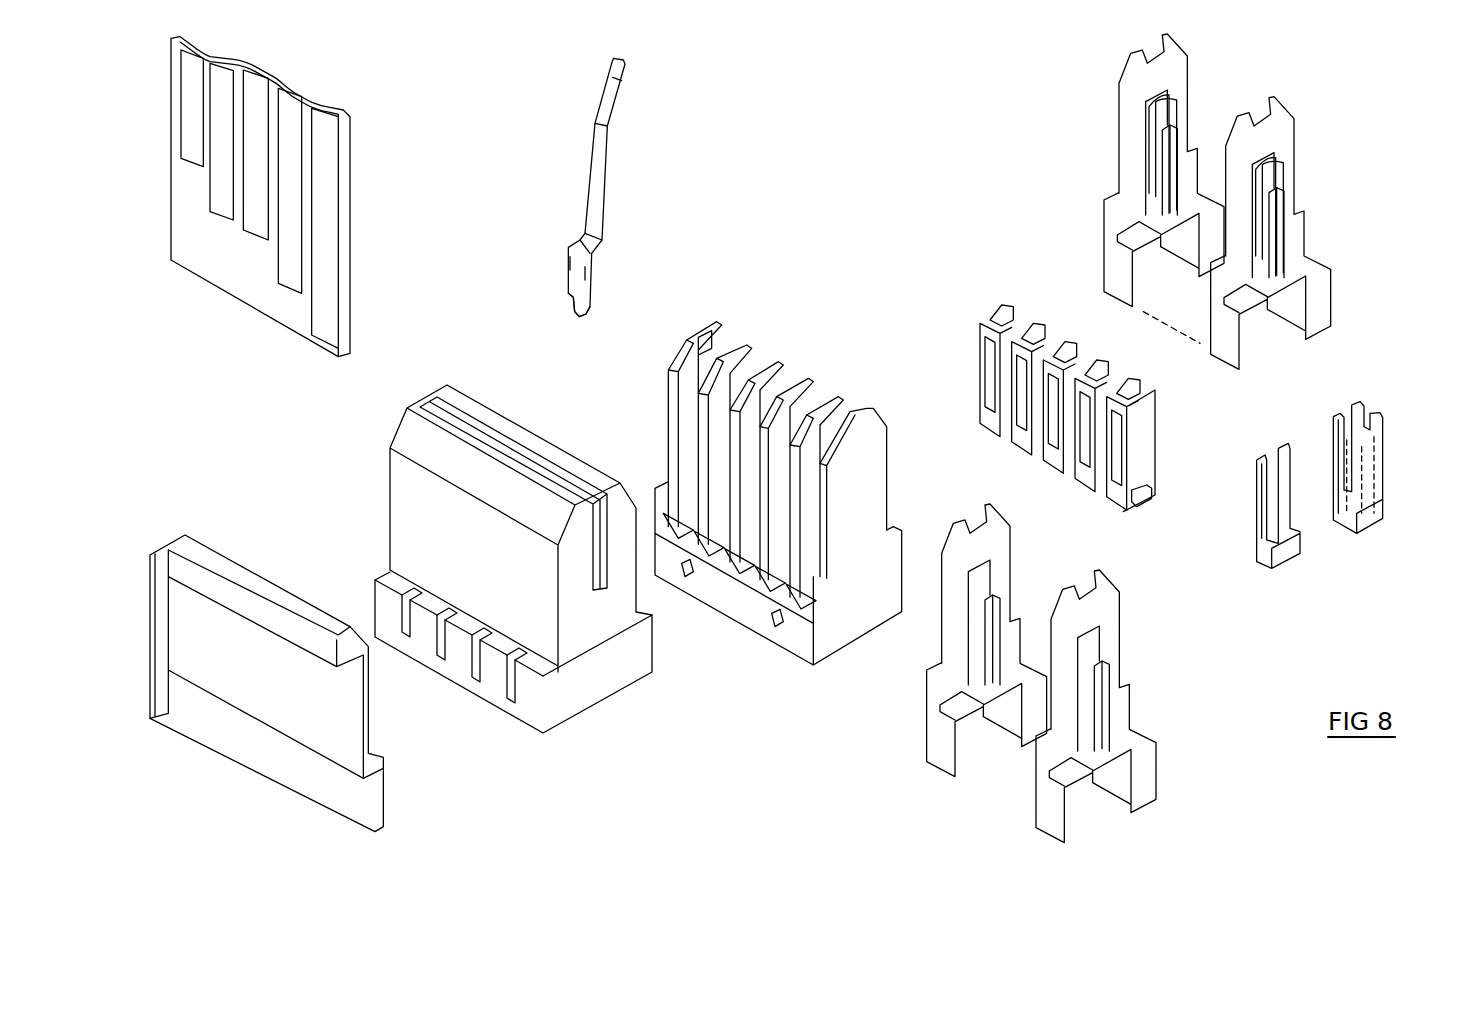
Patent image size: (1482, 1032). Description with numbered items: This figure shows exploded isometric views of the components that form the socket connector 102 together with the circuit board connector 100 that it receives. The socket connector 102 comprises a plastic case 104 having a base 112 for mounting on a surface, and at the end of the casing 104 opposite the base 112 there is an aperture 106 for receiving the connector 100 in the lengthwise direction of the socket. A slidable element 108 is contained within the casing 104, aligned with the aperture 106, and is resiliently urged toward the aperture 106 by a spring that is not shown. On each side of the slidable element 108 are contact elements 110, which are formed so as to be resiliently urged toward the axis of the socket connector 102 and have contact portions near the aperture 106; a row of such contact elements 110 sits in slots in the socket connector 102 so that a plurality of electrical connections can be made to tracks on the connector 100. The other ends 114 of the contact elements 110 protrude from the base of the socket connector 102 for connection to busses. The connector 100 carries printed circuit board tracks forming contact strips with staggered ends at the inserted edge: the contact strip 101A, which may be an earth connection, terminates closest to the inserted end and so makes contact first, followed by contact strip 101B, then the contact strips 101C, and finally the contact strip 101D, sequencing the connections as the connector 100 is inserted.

The connector 100 is at (294, 197).
The contact strip 101A is at (373, 228).
The contact strip 101B is at (272, 229).
The contact strips 101C is at (218, 199).
The contact strip 101D is at (160, 108).
The socket connector 102 is at (1380, 146).
The plastic case 104 is at (420, 490).
The aperture 106 is at (525, 452).
The slidable element 108 is at (1181, 436).
The contact elements 110 is at (619, 187).
The base 112 is at (553, 748).
The other ends 114 is at (546, 287).